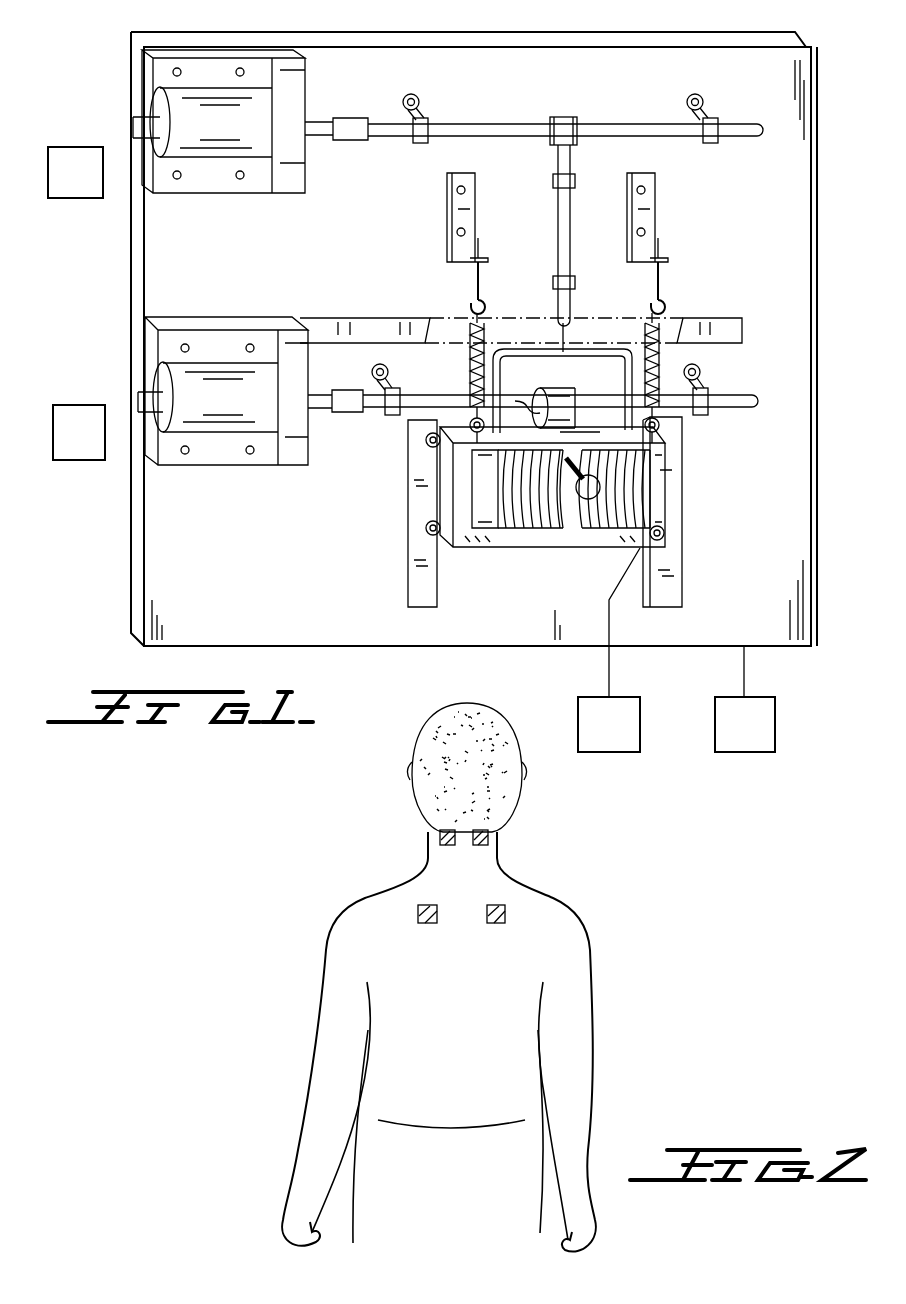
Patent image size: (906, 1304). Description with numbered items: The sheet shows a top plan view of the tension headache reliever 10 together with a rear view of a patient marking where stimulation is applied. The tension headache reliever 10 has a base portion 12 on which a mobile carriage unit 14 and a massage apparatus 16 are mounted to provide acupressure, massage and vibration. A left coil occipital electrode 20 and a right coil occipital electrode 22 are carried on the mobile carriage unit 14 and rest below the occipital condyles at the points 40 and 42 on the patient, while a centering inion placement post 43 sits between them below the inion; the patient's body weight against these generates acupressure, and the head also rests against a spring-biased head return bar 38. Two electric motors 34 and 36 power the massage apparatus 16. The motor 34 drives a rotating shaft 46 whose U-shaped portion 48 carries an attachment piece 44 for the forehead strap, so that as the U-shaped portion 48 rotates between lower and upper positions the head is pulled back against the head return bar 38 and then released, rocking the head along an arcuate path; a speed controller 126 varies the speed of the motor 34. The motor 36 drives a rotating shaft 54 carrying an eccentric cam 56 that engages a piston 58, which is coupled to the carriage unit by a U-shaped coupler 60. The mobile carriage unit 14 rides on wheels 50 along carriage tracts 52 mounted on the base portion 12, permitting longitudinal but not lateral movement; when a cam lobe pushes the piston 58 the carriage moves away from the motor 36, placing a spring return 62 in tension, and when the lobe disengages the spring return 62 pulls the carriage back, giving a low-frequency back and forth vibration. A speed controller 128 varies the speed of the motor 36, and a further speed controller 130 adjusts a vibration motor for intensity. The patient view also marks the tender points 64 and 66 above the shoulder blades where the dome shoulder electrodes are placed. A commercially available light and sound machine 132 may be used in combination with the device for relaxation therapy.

In FIG. 1, the tension headache reliever 10 is at (118, 283).
In FIG. 1, the base portion 12 is at (755, 255).
In FIG. 1, the mobile carriage unit 14 is at (680, 463).
In FIG. 1, the massage apparatus 16 is at (670, 231).
In FIG. 1, the left coil occipital electrode 20 is at (519, 530).
In FIG. 1, the right coil occipital electrode 22 is at (600, 530).
In FIG. 1, the electric motor 34 is at (217, 433).
In FIG. 1, the electric motor 36 is at (213, 55).
In FIG. 1, the head return bar 38 is at (742, 310).
In FIG. 1, the centering inion placement post 43 is at (605, 489).
In FIG. 1, the attachment piece 44 is at (563, 386).
In FIG. 1, the rotating shaft 46 is at (444, 393).
In FIG. 1, the U-shaped portion 48 is at (514, 398).
In FIG. 1, the wheels 50 is at (425, 525).
In FIG. 1, the carriage tracts 52 is at (408, 590).
In FIG. 1, the rotating shaft 54 is at (504, 105).
In FIG. 1, the eccentric cam 56 is at (567, 118).
In FIG. 1, the piston 58 is at (560, 240).
In FIG. 1, the U-shaped coupler 60 is at (593, 345).
In FIG. 1, the spring return 62 is at (474, 281).
In FIG. 2, the occipital point 40 is at (437, 834).
In FIG. 2, the occipital point 42 is at (500, 836).
In FIG. 2, the tender point 64 is at (415, 917).
In FIG. 2, the tender point 66 is at (507, 912).
In FIG. 1, the speed controller 126 is at (152, 432).
In FIG. 1, the speed controller 128 is at (150, 172).
In FIG. 1, the speed controller 130 is at (628, 736).
In FIG. 1, the light and sound machine 132 is at (763, 736).